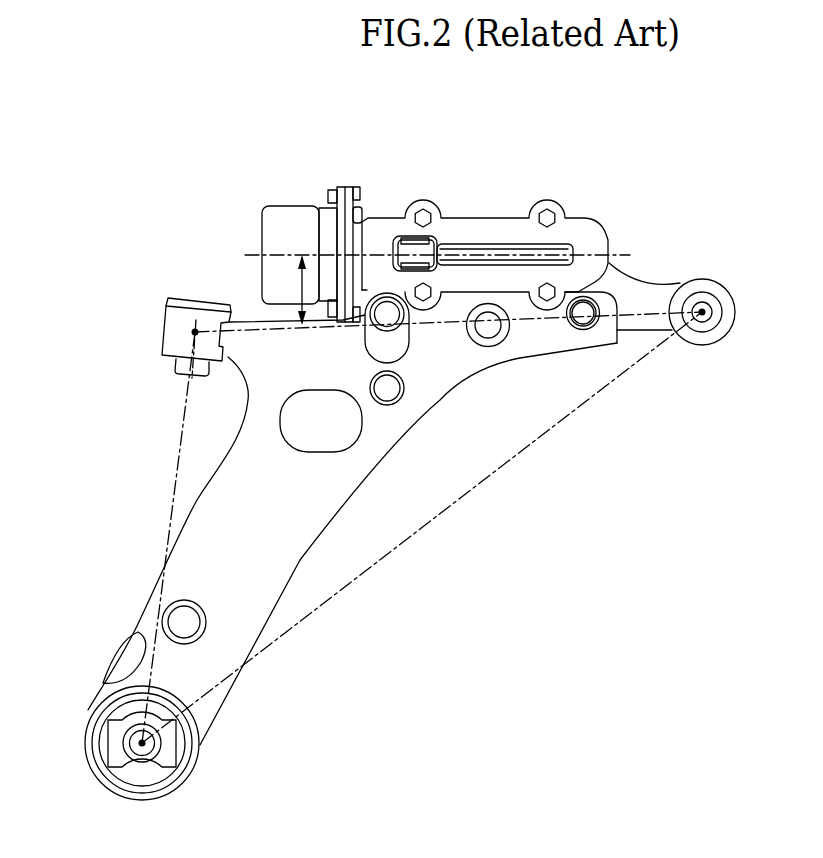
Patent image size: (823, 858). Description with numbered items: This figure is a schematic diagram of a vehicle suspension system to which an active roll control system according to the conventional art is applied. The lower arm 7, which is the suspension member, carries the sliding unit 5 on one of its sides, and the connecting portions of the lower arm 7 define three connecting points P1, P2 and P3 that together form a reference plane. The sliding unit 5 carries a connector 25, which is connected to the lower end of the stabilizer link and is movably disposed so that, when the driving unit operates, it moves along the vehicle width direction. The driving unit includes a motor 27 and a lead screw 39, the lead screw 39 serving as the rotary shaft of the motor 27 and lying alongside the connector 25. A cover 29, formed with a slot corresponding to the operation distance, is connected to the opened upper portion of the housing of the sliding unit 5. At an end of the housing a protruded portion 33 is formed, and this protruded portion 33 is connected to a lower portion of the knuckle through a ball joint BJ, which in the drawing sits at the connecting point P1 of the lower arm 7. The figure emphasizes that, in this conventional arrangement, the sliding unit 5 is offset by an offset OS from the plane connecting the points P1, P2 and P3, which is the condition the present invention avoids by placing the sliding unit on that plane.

The sliding unit 5 is at (476, 205).
The lower arm 7 is at (312, 490).
The connector 25 is at (408, 248).
The motor 27 is at (285, 218).
The cover 29 is at (573, 229).
The protruded portion 33 is at (633, 290).
The lead screw 39 is at (512, 250).
The offset OS is at (286, 290).
The ball joint BJ is at (703, 300).
The connecting point P1 is at (696, 324).
The connecting point P2 is at (182, 327).
The connecting point P3 is at (165, 754).